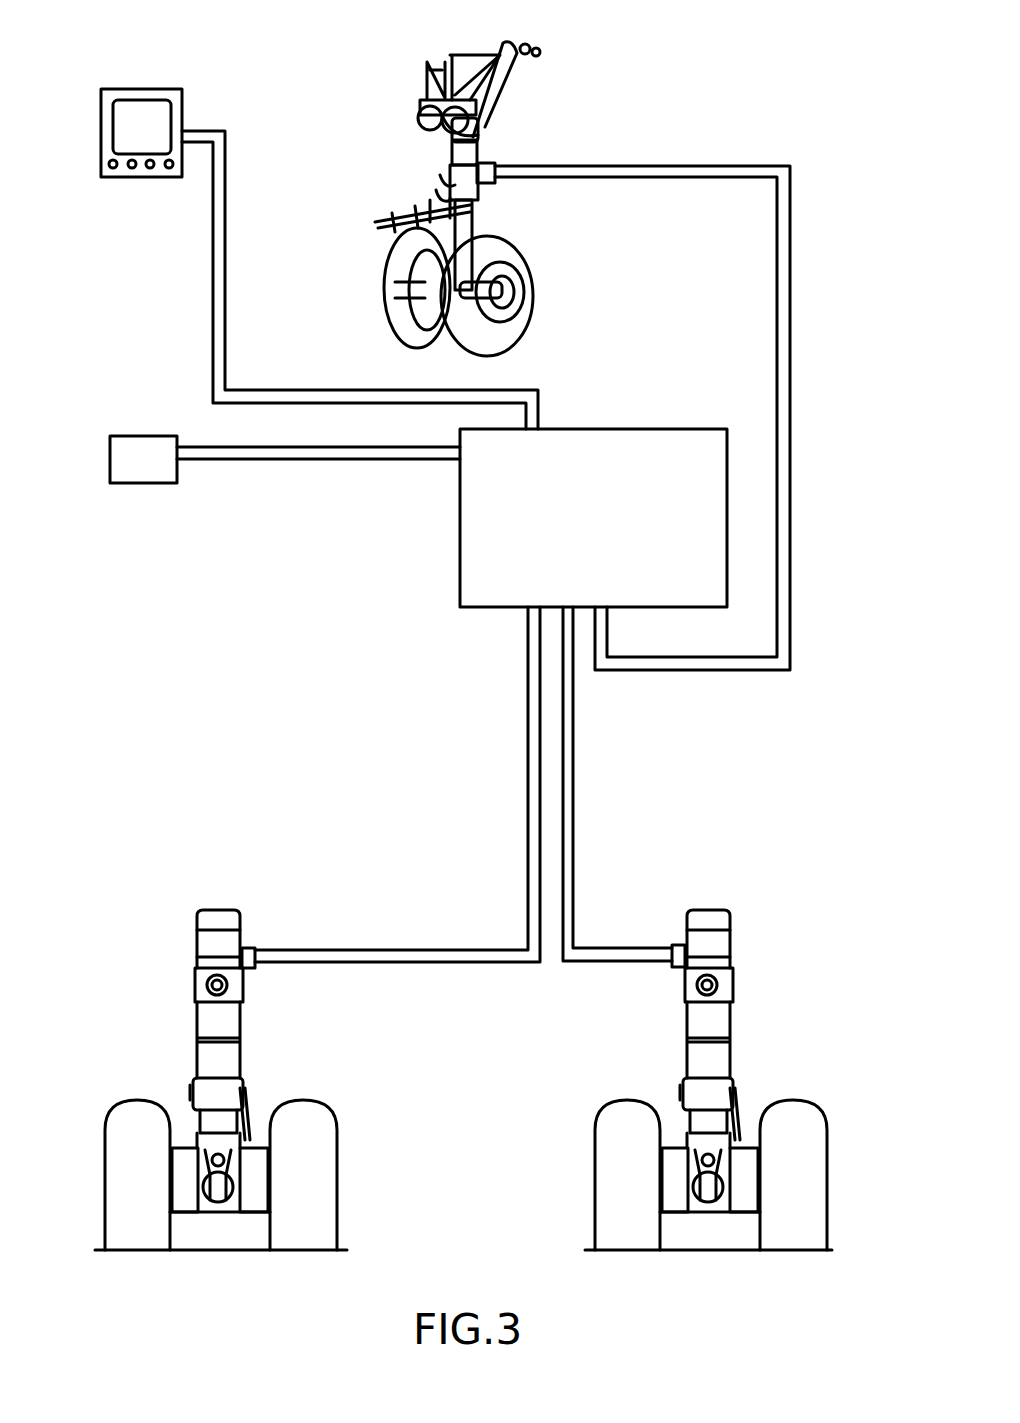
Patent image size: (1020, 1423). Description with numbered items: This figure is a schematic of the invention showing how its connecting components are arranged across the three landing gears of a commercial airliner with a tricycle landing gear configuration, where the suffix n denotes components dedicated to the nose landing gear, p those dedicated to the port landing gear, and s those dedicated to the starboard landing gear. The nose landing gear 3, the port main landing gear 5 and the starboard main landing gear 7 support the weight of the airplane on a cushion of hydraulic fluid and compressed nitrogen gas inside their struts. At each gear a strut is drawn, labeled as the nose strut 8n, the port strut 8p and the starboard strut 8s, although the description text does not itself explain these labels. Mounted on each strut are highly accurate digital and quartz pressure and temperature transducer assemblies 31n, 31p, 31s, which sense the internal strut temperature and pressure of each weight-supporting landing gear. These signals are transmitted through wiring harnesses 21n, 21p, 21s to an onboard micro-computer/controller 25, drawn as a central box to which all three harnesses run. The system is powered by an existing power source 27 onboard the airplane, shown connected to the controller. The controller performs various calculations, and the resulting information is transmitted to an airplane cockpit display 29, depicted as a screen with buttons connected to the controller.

The nose landing gear 3 is at (477, 230).
The port main landing gear 5 is at (235, 1088).
The starboard main landing gear 7 is at (698, 1092).
The nose gear shock strut 8n is at (450, 150).
The port gear shock strut 8p is at (198, 945).
The starboard gear shock strut 8s is at (720, 1024).
The wiring harness 21n is at (777, 264).
The wiring harness 21p is at (528, 745).
The wiring harness 21s is at (620, 965).
The onboard micro-computer/controller 25 is at (466, 540).
The existing power source 27 is at (152, 446).
The airplane cockpit display 29 is at (138, 105).
The pressure and temperature transducer assembly 31n is at (487, 160).
The pressure and temperature transducer assembly 31p is at (250, 948).
The pressure and temperature transducer assembly 31s is at (675, 945).